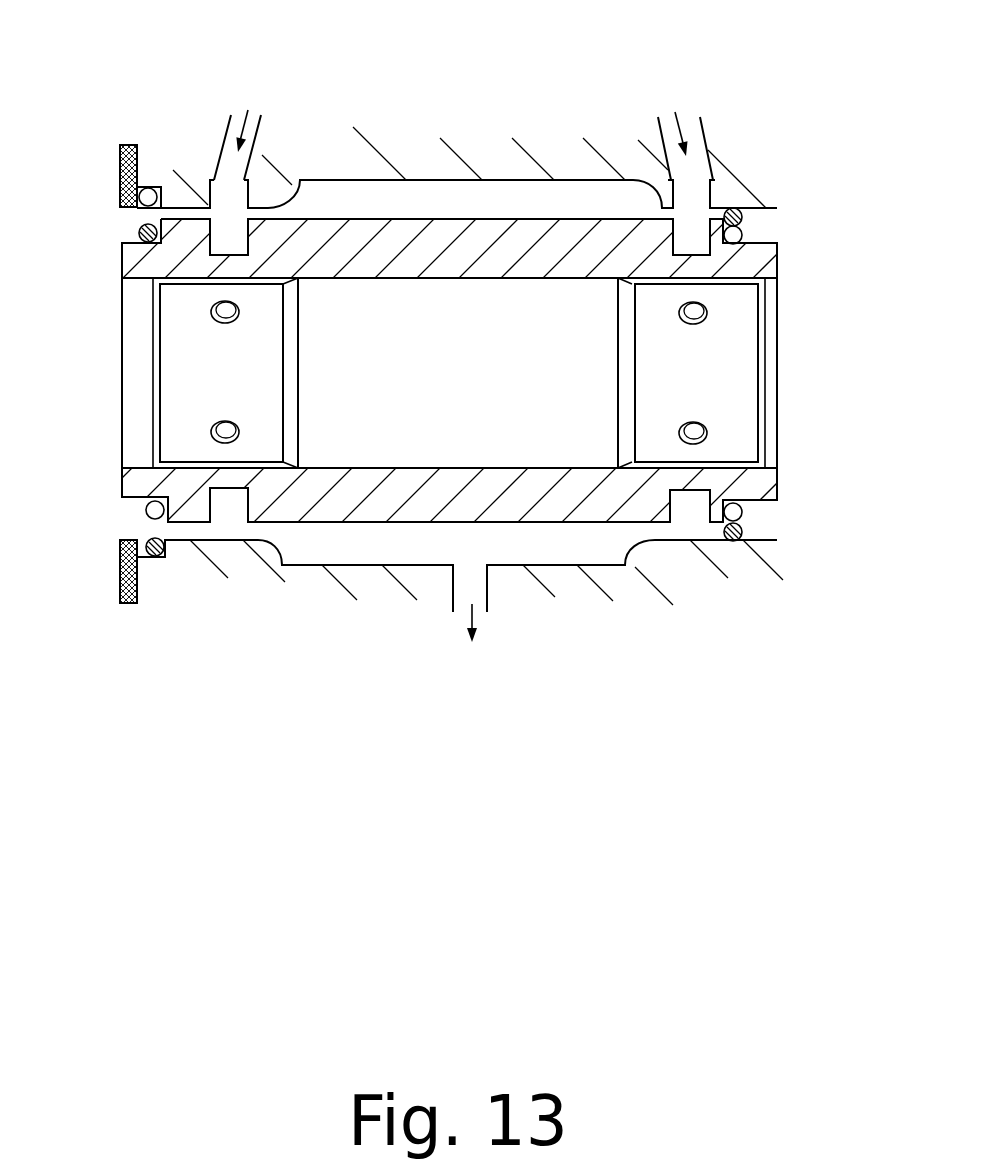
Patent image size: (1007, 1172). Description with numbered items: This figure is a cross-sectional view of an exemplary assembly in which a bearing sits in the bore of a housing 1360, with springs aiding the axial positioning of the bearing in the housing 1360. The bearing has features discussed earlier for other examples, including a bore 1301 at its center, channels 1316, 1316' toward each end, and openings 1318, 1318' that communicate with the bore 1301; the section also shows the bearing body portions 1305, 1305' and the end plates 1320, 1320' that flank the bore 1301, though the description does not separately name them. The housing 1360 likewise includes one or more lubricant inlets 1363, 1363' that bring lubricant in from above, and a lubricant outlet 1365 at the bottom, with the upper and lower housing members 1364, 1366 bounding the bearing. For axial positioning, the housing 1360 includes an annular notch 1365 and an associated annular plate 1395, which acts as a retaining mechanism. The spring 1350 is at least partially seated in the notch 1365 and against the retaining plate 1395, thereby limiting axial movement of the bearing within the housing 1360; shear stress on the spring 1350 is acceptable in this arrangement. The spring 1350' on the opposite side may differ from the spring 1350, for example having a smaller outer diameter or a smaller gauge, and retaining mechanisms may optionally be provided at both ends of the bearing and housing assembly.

The bore 1301 is at (420, 430).
The housing body 1305 is at (447, 367).
The housing body (right side) 1305' is at (657, 370).
The channel 1316 is at (162, 374).
The channel 1316' is at (744, 374).
The opening 1318 is at (320, 372).
The opening 1318' is at (601, 373).
The plate 1320 is at (221, 373).
The plate (right side) 1320' is at (696, 373).
The spring 1350 is at (93, 377).
The spring 1350' is at (799, 378).
The housing 1360 is at (537, 65).
The lubricant inlet 1363 is at (266, 130).
The lubricant inlet 1363' is at (664, 134).
The top cover plate 1364 is at (420, 209).
The lubricant outlet / annular notch 1365 is at (150, 187).
The bottom plate 1366 is at (448, 557).
The annular plate (retaining mechanism) 1395 is at (120, 172).